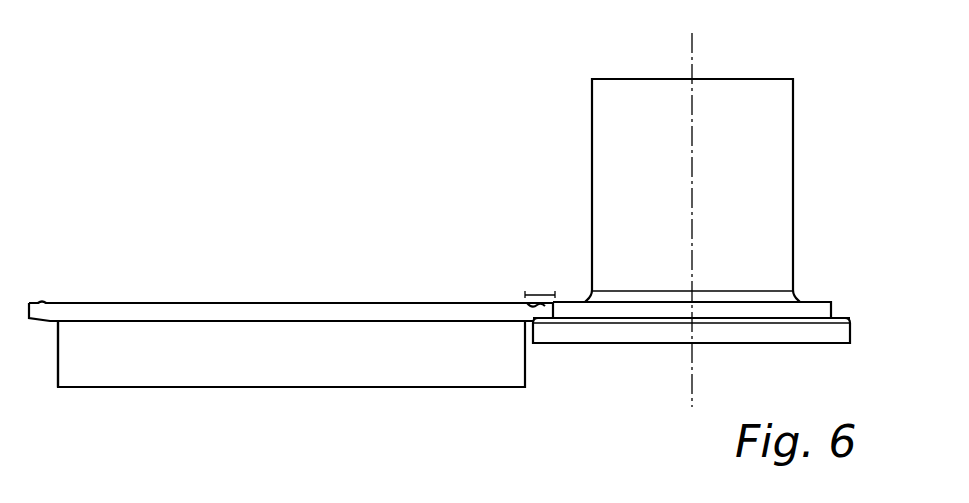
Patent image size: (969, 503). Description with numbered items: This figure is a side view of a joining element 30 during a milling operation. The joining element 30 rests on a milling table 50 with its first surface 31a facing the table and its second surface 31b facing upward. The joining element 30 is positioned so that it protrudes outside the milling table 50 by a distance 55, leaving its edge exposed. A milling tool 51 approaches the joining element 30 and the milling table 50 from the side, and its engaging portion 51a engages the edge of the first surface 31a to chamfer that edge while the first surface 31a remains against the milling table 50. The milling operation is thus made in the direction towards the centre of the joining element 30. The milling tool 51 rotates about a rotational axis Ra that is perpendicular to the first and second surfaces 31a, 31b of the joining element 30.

The joining element 30 is at (218, 303).
The first surface 31a is at (75, 327).
The second surface 31b is at (354, 303).
The milling table 50 is at (322, 365).
The milling tool 51 is at (767, 123).
The engaging portion 51a is at (548, 332).
The distance 55 is at (540, 292).
The rotational axis Ra is at (693, 55).